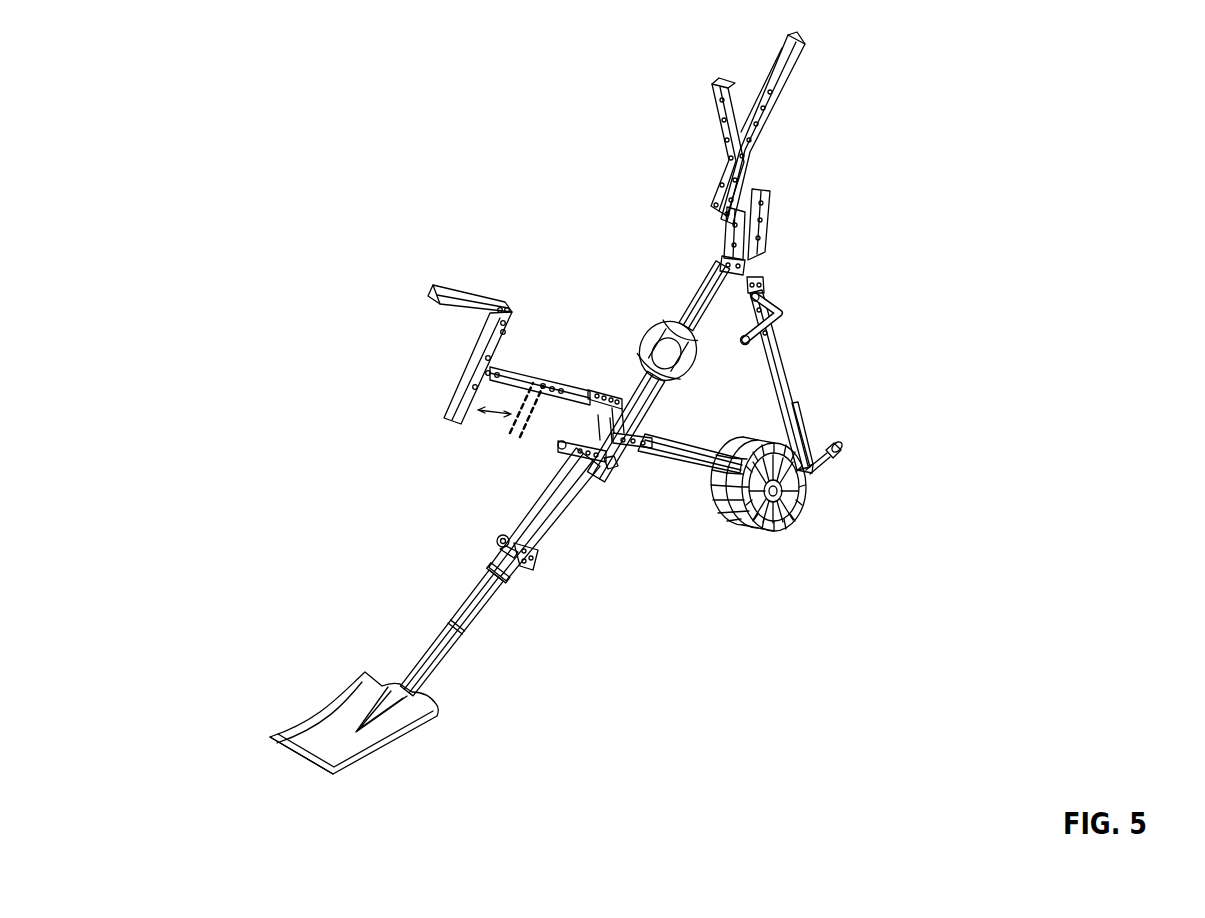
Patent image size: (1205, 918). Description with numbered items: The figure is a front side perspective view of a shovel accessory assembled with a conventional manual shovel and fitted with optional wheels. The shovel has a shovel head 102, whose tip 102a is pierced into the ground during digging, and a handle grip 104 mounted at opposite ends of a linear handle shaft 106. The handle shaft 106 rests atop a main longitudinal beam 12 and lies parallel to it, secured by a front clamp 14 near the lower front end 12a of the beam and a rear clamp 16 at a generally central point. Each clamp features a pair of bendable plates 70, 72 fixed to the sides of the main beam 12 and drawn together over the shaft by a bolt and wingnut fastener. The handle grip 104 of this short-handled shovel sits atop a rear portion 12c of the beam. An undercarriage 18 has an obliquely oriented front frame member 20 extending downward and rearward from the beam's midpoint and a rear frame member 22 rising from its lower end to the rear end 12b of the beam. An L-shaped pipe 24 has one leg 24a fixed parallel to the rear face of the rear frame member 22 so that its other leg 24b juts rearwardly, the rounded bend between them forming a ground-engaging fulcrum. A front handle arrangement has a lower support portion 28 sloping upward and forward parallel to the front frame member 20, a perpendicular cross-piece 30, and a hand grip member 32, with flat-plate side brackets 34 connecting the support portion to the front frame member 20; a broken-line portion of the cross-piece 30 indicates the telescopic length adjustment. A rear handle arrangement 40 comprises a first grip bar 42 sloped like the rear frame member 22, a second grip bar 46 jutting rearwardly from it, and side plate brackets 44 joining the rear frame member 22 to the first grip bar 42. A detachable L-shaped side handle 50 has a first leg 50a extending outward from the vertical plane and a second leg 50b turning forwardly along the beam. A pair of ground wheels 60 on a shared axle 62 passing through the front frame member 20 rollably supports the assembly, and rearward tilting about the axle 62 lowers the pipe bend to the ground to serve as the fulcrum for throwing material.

The main longitudinal beam 12 is at (572, 463).
The lower front end of the main beam 12a is at (473, 620).
The rear end of the main beam 12b is at (726, 260).
The rear portion of the main beam 12c is at (712, 310).
The front clamp 14 is at (494, 521).
The rear clamp 16 is at (549, 447).
The undercarriage 18 is at (820, 389).
The front frame member 20 is at (682, 468).
The rear frame member 22 is at (783, 363).
The L-shaped pipe 24 is at (820, 435).
The first leg of the L-shaped pipe 24a is at (803, 413).
The second leg of the L-shaped pipe 24b is at (818, 473).
The lower support portion 28 is at (515, 377).
The cross-piece 30 is at (450, 397).
The hand grip member 32 is at (458, 292).
The flat-plate side brackets 34 is at (633, 425).
The rear handle arrangement 40 is at (754, 146).
The first grip bar 42 is at (723, 117).
The side plate brackets 44 is at (767, 228).
The second grip bar 46 is at (793, 62).
The detachable side handle 50 is at (794, 305).
The first leg of the side handle 50a is at (768, 293).
The second leg of the side handle 50b is at (745, 345).
The ground wheels 60 is at (790, 513).
The axle 62 is at (780, 496).
The bendable plate 70 is at (514, 572).
The bendable plate 72 is at (612, 458).
The shovel head 102 is at (333, 703).
The tip of the shovel head 102a is at (278, 733).
The handle grip 104 is at (672, 330).
The handle shaft 106 is at (545, 490).